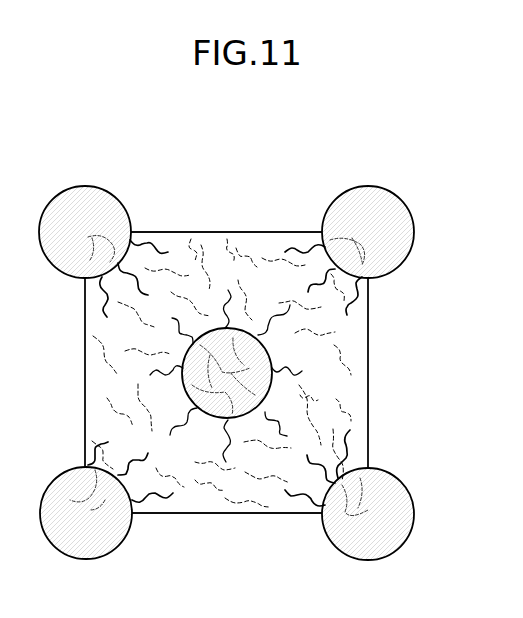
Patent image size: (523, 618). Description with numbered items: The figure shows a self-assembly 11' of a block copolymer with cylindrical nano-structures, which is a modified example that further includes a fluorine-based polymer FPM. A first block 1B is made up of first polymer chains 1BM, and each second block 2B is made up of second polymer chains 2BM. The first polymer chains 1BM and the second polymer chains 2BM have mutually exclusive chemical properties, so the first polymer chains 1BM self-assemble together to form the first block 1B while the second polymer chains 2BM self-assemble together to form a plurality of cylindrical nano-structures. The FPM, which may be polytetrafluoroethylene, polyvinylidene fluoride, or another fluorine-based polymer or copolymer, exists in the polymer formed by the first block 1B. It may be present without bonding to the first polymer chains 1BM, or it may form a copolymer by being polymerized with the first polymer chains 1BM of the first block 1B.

The self-assembly of a BCP with cylindrical nano-structures 11' is at (226, 304).
The first block 1B is at (91, 372).
The second block 2B is at (413, 222).
The first polymer chains 1BM is at (302, 368).
The second polymer chains 2BM is at (355, 295).
The fluorine-based polymer FPM is at (338, 408).